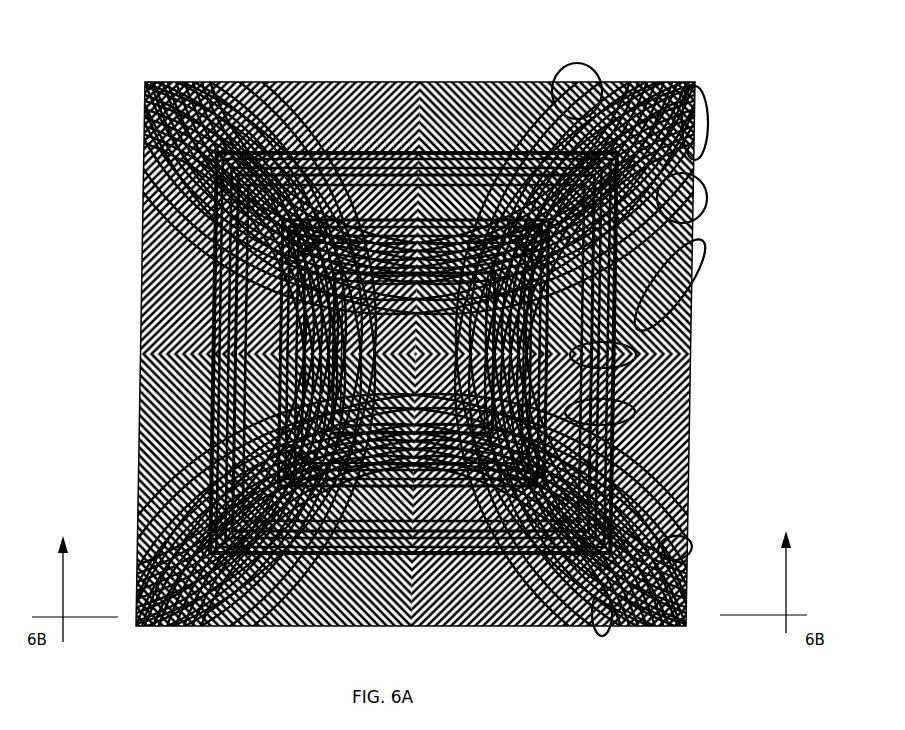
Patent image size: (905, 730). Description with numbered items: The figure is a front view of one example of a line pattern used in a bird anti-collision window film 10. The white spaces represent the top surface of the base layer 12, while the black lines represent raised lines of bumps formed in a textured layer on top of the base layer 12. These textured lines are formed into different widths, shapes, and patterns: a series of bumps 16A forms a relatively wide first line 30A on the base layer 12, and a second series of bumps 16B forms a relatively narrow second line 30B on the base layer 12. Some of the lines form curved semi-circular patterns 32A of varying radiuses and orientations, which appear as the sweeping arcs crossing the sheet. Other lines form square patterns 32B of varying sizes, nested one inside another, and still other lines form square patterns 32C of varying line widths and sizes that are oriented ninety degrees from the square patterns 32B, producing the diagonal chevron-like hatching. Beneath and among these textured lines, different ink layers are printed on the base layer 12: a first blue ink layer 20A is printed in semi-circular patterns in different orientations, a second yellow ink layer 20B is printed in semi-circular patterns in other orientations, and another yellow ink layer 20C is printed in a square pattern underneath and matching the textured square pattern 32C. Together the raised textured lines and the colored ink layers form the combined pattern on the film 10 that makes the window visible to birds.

The bird anti-collision film 10 is at (136, 90).
The base layer 12 is at (142, 273).
The series of bumps 16A is at (143, 237).
The second series of bumps 16B is at (142, 322).
The first blue ink layer 20A is at (572, 63).
The second yellow ink layer 20B is at (692, 548).
The yellow ink layer 20C is at (633, 413).
The first line 30A is at (145, 188).
The second line 30B is at (153, 308).
The curved semi-circular patterns 32A is at (710, 127).
The square patterns 32B is at (700, 263).
The square patterns 32C is at (687, 363).